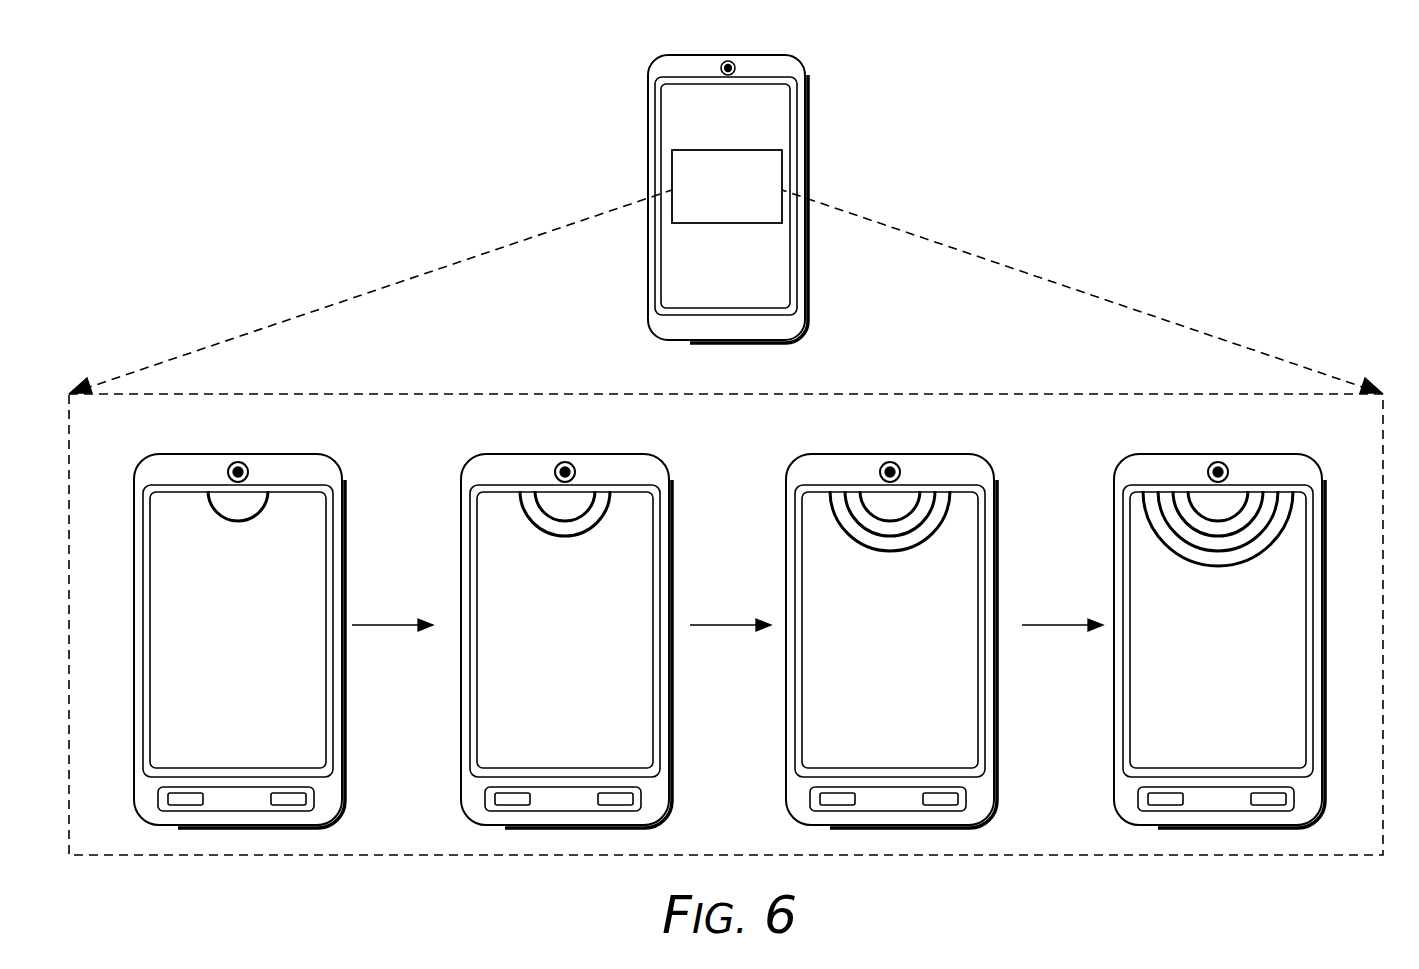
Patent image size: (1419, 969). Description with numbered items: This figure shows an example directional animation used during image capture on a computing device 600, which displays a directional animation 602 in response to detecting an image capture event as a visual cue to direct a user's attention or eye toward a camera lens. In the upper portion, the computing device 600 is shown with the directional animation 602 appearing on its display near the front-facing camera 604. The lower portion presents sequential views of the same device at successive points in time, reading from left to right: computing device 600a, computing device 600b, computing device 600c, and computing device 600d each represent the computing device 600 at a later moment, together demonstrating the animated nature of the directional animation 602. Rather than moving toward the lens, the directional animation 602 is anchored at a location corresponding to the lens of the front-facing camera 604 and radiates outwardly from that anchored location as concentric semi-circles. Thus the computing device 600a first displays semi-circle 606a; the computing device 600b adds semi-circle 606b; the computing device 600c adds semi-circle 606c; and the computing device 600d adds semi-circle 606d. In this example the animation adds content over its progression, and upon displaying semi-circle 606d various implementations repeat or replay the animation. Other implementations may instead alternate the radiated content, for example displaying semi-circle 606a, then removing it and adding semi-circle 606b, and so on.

The computing device 600 is at (746, 179).
The directional animation 602 is at (770, 150).
The front-facing camera 604 is at (721, 57).
The computing device 600a is at (258, 620).
The computing device 600b is at (584, 620).
The computing device 600c is at (911, 620).
The computing device 600d is at (1240, 620).
The semi-circle 606a is at (237, 524).
The semi-circle 606b is at (565, 539).
The semi-circle 606c is at (890, 553).
The semi-circle 606d is at (1218, 568).